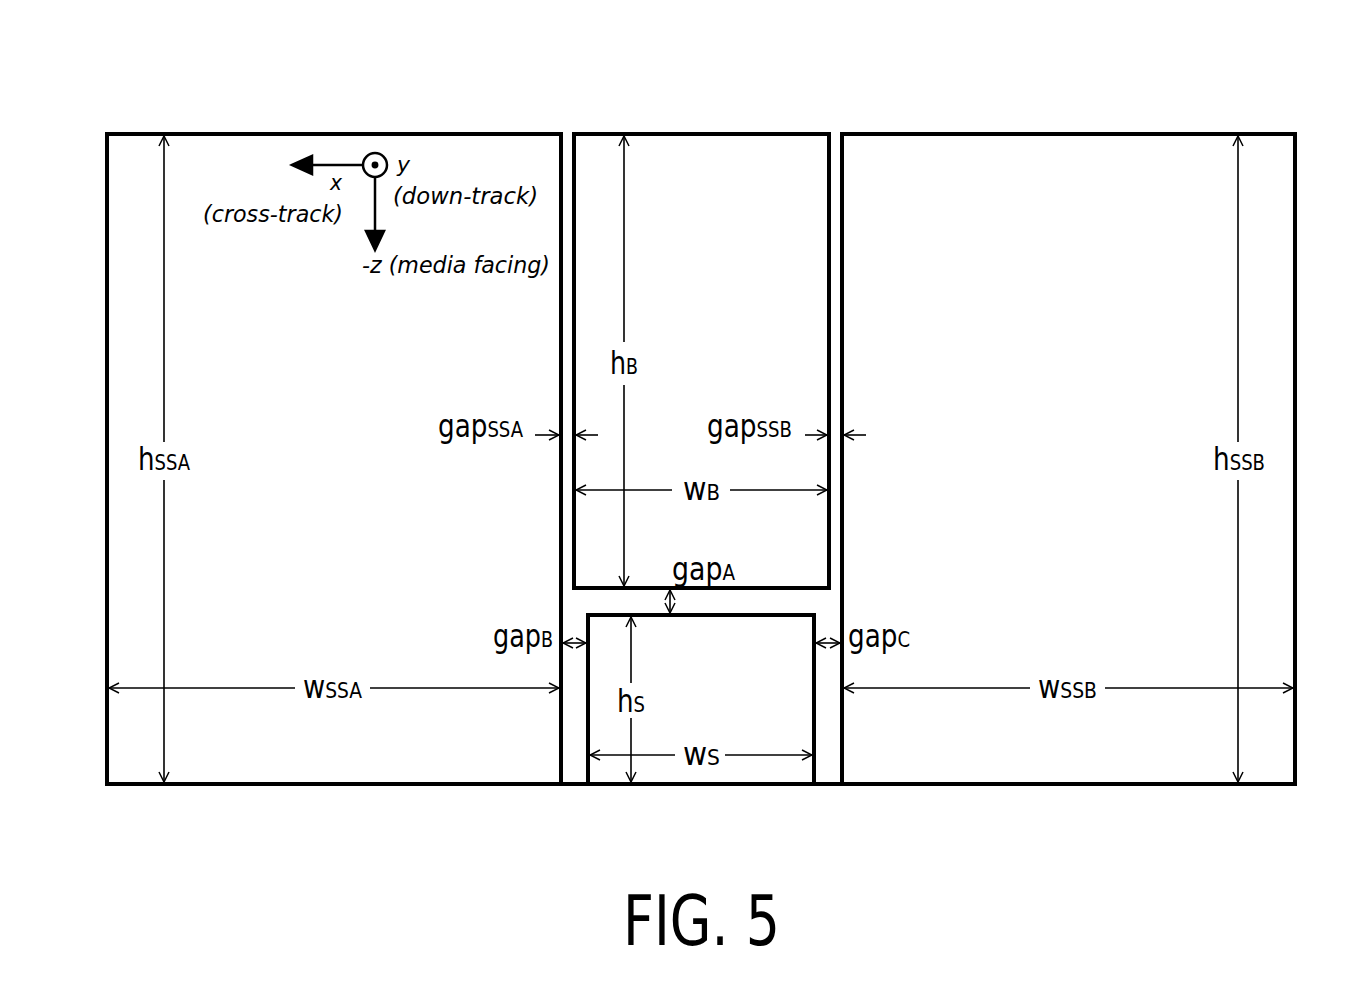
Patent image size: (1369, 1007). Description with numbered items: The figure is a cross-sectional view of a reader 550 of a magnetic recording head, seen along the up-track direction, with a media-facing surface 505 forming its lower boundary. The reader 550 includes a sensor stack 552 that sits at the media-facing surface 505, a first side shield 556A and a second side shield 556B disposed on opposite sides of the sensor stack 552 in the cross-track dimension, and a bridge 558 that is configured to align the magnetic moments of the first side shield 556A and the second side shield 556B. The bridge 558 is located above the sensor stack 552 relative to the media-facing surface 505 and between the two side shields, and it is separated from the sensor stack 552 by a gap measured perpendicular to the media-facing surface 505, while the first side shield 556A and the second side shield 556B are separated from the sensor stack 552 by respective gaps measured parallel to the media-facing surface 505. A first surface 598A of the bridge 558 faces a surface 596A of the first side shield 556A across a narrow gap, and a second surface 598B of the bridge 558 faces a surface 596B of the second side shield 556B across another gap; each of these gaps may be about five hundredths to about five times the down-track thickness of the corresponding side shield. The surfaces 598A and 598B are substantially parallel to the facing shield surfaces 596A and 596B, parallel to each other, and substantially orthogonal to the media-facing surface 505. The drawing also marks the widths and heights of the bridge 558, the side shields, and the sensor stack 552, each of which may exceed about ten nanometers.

The reader 550 is at (999, 78).
The media-facing surface 505 is at (1127, 786).
The sensor stack 552 is at (725, 717).
The bridge 558 is at (725, 380).
The first side shield 556A is at (368, 478).
The second side shield 556B is at (1102, 478).
The surface of first side shield 596A is at (561, 170).
The surface of second side shield 596B is at (842, 165).
The first surface of bridge 598A is at (574, 160).
The second surface of bridge 598B is at (829, 172).